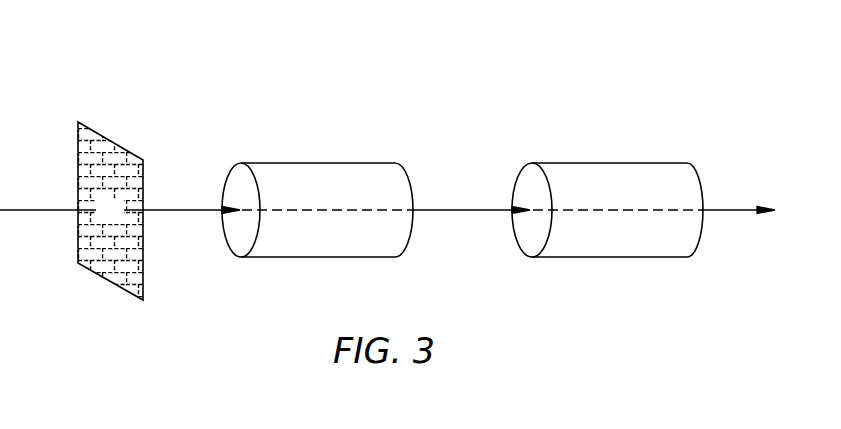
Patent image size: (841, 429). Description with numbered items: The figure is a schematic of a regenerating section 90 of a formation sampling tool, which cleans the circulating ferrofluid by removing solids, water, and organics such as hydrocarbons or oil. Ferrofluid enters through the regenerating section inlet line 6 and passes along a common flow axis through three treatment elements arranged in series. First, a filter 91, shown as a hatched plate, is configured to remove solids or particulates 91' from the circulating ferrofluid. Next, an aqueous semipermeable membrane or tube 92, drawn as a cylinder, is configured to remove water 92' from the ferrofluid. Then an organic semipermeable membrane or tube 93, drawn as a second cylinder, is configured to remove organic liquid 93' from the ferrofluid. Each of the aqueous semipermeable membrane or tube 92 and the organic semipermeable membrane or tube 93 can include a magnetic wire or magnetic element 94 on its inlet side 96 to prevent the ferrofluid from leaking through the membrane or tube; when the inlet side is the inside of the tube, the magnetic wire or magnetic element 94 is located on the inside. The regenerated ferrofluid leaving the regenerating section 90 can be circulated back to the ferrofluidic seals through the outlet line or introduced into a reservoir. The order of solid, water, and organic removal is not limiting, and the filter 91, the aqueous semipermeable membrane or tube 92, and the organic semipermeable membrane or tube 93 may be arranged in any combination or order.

The regenerating section 90 is at (243, 65).
The filter 91 is at (110, 211).
The solids/particulates 91' is at (61, 301).
The regenerating section inlet line 6 is at (32, 250).
The aqueous semipermeable membrane or tube 92 is at (317, 210).
The water 92' is at (362, 143).
The organic semipermeable membrane or tube 93 is at (607, 210).
The organic liquid 93' is at (652, 142).
The magnetic wire or magnetic element 94 is at (587, 211).
The inlet side 96 is at (240, 176).